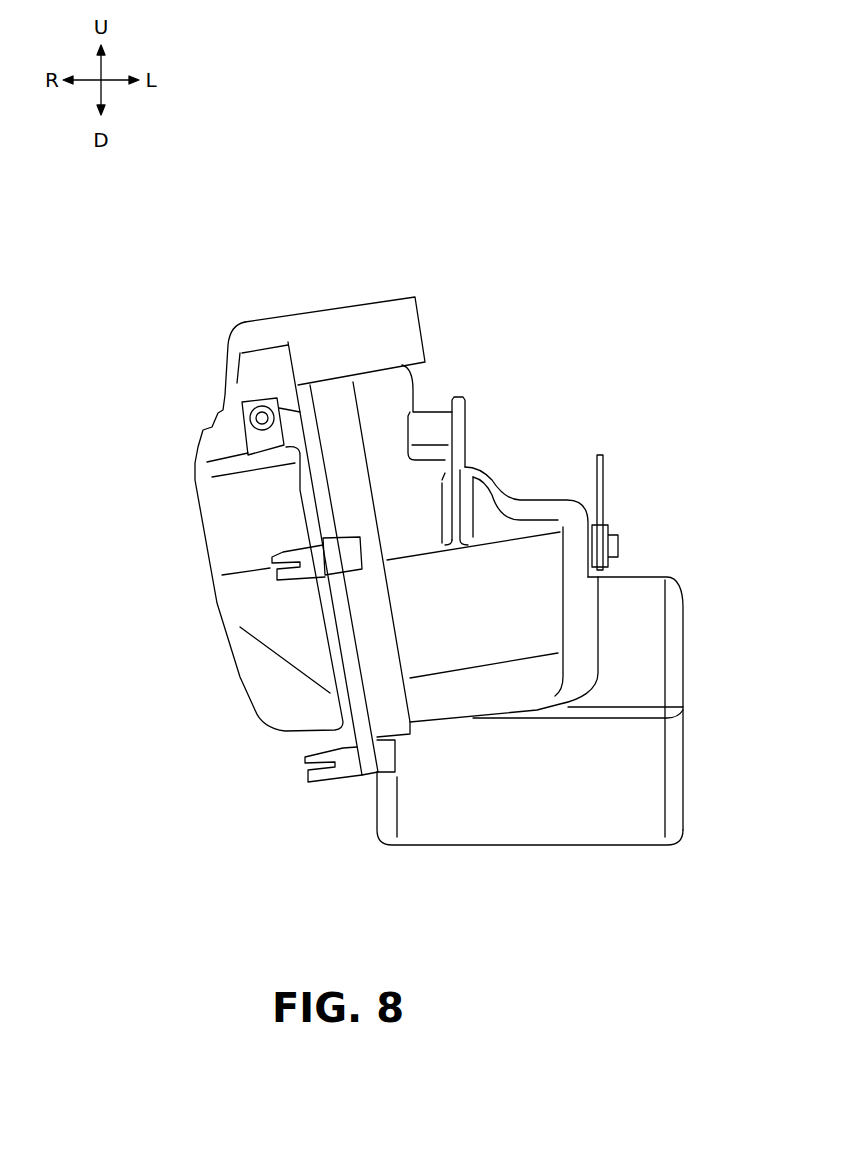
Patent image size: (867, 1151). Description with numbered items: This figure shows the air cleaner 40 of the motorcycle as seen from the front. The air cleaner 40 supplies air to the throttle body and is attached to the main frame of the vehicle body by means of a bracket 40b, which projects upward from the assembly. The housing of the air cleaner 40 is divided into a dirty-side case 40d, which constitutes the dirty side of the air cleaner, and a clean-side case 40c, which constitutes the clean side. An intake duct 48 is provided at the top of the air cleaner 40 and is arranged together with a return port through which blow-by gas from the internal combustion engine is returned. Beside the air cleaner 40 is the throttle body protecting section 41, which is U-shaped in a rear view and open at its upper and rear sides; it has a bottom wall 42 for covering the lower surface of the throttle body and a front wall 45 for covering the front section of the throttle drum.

The air cleaner 40 is at (623, 338).
The bracket 40b is at (603, 463).
The clean-side case 40c is at (353, 648).
The dirty-side case 40d is at (337, 702).
The throttle body protecting section 41 is at (572, 746).
The bottom wall 42 is at (548, 820).
The front wall 45 is at (640, 642).
The intake duct 48 is at (362, 315).